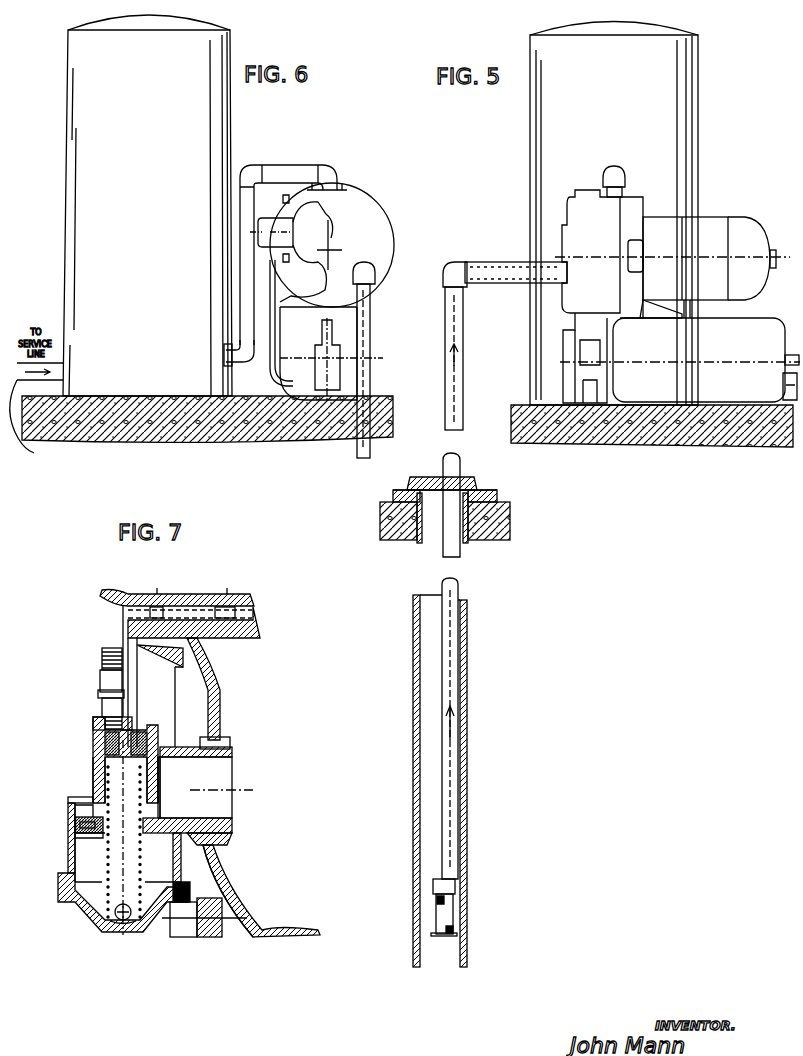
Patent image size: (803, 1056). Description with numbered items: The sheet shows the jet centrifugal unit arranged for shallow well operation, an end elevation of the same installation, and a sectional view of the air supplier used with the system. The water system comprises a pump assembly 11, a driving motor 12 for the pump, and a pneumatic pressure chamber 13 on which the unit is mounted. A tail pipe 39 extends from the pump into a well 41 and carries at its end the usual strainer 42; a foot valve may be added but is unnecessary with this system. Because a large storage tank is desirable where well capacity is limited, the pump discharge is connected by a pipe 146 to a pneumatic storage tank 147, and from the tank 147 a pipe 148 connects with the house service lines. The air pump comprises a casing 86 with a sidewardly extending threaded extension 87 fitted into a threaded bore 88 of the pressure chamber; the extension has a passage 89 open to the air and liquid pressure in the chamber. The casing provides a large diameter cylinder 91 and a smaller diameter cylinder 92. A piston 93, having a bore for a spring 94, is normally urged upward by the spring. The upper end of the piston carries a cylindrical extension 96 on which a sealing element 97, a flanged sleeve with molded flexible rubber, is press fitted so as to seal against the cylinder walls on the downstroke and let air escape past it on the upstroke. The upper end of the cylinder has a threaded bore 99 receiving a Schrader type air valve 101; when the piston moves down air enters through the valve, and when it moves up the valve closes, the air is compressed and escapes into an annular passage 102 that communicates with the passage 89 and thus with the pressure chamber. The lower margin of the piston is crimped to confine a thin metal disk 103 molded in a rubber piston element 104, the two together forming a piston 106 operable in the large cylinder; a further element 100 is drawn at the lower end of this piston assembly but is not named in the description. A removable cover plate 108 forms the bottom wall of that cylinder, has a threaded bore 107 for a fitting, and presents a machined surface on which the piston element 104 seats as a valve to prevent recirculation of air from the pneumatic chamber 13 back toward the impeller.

In FIG. 6, the pump assembly 11 is at (322, 291).
In FIG. 5, the pump assembly 11 is at (672, 254).
In FIG. 5, the driving motor 12 is at (708, 267).
In FIG. 5, the pneumatic pressure chamber 13 is at (680, 360).
In FIG. 7, the pneumatic pressure chamber 13 is at (257, 937).
In FIG. 6, the tail pipe 39 is at (371, 338).
In FIG. 5, the tail pipe 39 is at (482, 262).
In FIG. 5, the well 41 is at (467, 832).
In FIG. 5, the strainer 42 is at (456, 911).
In FIG. 5, the casing 86 is at (567, 381).
In FIG. 7, the casing 86 is at (71, 870).
In FIG. 7, the threaded extension 87 is at (232, 827).
In FIG. 7, the threaded bore 88 is at (220, 833).
In FIG. 7, the passage 89 is at (218, 780).
In FIG. 7, the large diameter cylinder 91 is at (66, 893).
In FIG. 7, the smaller diameter cylinder 92 is at (85, 800).
In FIG. 7, the piston 93 is at (76, 815).
In FIG. 7, the spring 94 is at (112, 778).
In FIG. 7, the cylindrical extension 96 is at (95, 752).
In FIG. 7, the sealing element 97 is at (93, 736).
In FIG. 7, the threaded bore 99 is at (95, 716).
In FIG. 7, the seal 100 is at (145, 887).
In FIG. 7, the Schrader type air valve 101 is at (100, 679).
In FIG. 7, the annular passage 102 is at (157, 773).
In FIG. 7, the metal disk 103 is at (75, 830).
In FIG. 7, the piston element 104 is at (75, 845).
In FIG. 7, the piston 106 is at (213, 847).
In FIG. 7, the threaded bore 107 is at (117, 921).
In FIG. 7, the removable cover plate 108 is at (129, 925).
In FIG. 6, the pipe 146 is at (300, 165).
In FIG. 5, the pipe 146 is at (626, 174).
In FIG. 6, the pneumatic storage tank 147 is at (147, 205).
In FIG. 5, the pneumatic storage tank 147 is at (614, 214).
In FIG. 6, the pipe 148 is at (36, 420).